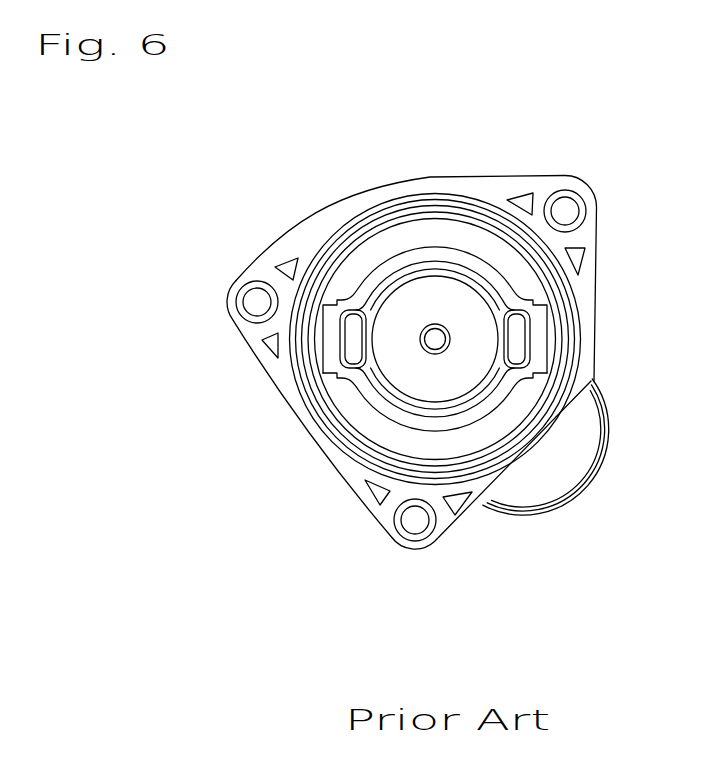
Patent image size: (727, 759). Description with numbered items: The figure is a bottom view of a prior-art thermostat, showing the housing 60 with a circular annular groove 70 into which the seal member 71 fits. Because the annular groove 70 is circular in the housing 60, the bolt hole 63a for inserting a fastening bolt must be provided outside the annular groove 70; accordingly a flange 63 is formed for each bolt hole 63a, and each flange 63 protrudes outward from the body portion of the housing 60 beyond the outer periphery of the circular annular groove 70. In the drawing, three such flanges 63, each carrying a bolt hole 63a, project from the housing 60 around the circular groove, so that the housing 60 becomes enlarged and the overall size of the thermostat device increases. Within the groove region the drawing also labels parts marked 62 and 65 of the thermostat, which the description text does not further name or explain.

The housing 60 is at (476, 177).
The frame leg 62 is at (328, 340).
The flange 63 is at (270, 271).
The bolt hole 63a is at (243, 298).
The valve body 65 is at (453, 365).
The annular groove 70 is at (331, 237).
The seal member 71 is at (387, 201).